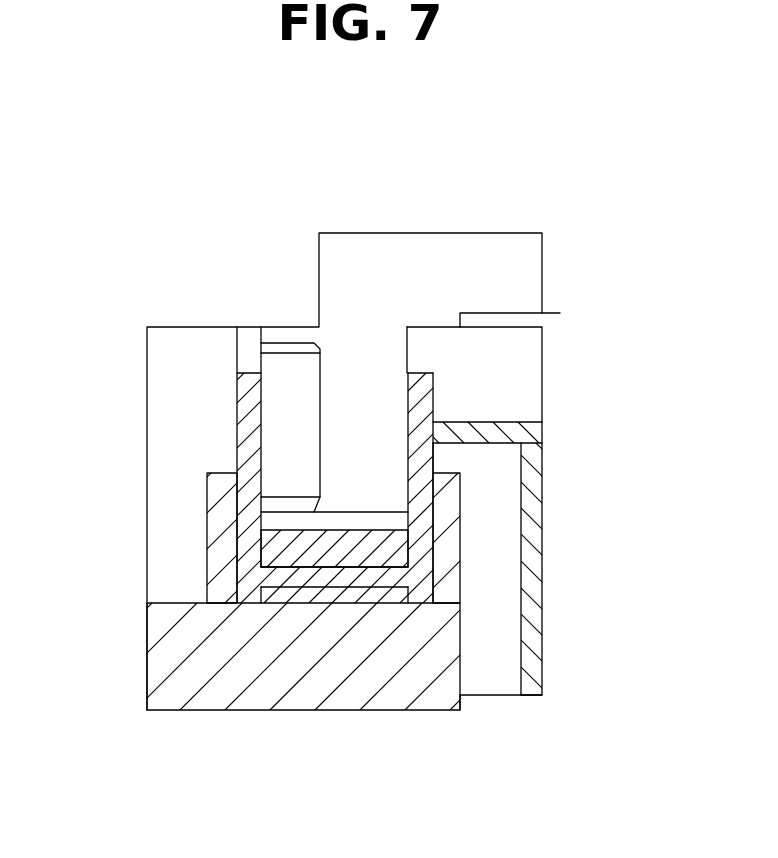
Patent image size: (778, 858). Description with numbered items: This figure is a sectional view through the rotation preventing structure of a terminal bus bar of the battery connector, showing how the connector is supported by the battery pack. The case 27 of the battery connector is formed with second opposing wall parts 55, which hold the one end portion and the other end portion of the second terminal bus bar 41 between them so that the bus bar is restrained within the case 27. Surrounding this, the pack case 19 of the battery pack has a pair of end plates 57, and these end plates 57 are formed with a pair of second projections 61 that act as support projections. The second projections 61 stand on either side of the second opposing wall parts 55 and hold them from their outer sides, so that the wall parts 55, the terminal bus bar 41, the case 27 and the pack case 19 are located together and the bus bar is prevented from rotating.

The pack case 19 is at (160, 718).
The case 27 is at (552, 670).
The second terminal bus bar 41 is at (351, 517).
The second opposing wall parts 55 is at (420, 375).
The end plates 57 is at (147, 648).
The second projections 61 is at (218, 502).